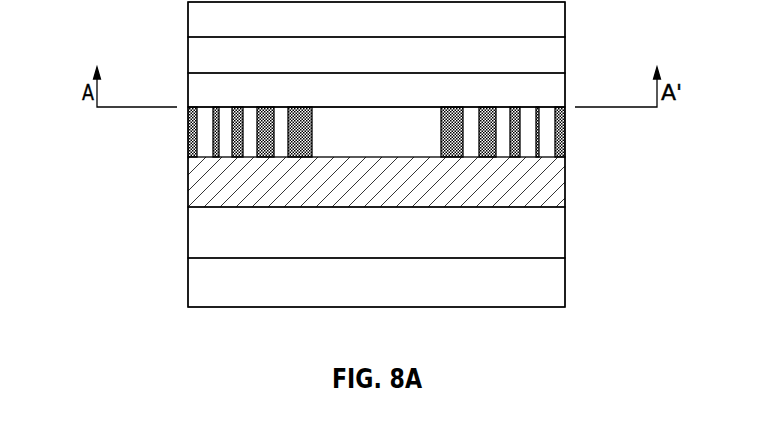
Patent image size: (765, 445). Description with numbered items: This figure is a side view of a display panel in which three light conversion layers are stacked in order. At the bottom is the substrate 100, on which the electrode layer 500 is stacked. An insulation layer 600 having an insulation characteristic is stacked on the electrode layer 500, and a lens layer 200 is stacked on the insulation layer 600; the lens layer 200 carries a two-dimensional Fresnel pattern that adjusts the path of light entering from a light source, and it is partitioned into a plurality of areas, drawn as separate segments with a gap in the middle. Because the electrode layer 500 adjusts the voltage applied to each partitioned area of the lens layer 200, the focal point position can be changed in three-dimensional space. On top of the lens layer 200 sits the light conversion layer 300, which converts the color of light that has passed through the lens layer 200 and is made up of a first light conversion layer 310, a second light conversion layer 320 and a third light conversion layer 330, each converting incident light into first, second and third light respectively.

The substrate 100 is at (566, 287).
The lens layer 200 is at (188, 134).
The light conversion layer 300 is at (125, 7).
The first light conversion layer 310 is at (188, 92).
The second light conversion layer 320 is at (188, 55).
The third light conversion layer 330 is at (188, 19).
The electrode layer 500 is at (188, 233).
The insulation layer 600 is at (566, 187).